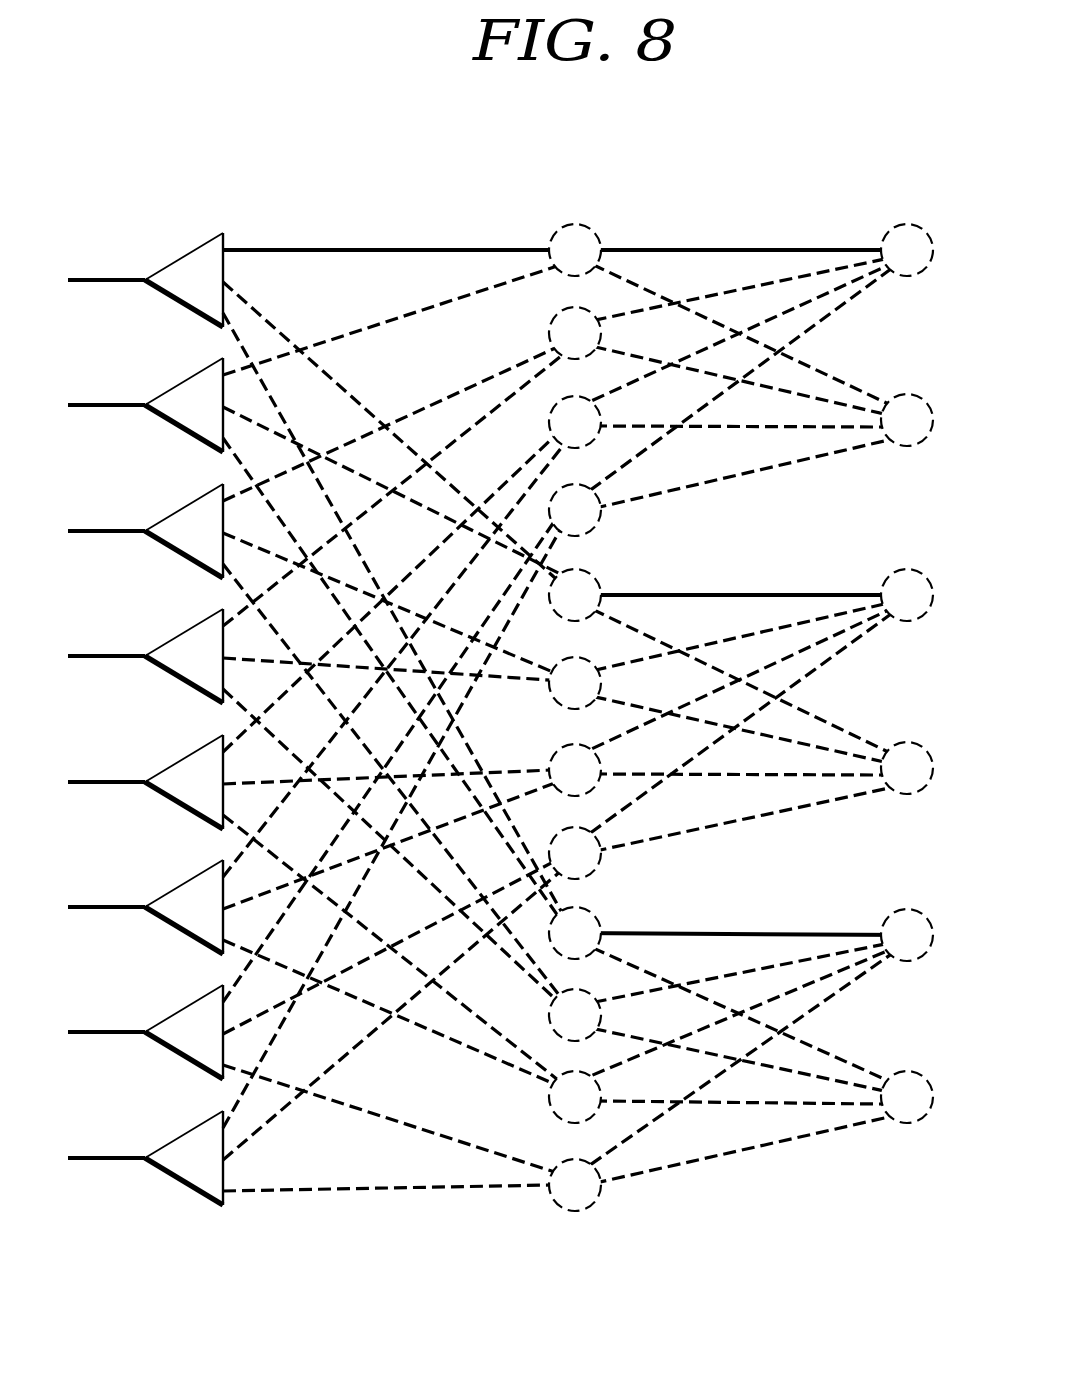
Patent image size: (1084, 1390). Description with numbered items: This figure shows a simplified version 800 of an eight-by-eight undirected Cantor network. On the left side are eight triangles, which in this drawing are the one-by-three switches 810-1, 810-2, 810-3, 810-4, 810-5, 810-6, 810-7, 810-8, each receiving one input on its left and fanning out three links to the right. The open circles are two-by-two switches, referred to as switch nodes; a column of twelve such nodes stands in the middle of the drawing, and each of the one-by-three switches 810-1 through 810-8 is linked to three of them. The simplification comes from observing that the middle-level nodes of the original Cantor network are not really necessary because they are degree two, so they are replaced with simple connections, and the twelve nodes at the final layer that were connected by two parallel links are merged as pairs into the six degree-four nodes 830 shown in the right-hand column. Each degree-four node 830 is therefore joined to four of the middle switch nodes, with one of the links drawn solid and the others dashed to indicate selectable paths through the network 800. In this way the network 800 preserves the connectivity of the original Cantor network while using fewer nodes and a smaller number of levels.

The simplified 8×8 undirected Cantor network 800 is at (833, 144).
The input amplifier 1 810-1 is at (182, 256).
The input amplifier 2 810-2 is at (182, 381).
The input amplifier 3 810-3 is at (182, 507).
The input amplifier 4 810-4 is at (182, 632).
The input amplifier 5 810-5 is at (182, 758).
The input amplifier 6 810-6 is at (182, 883).
The input amplifier 7 810-7 is at (182, 1008).
The input amplifier 8 810-8 is at (182, 1134).
The degree-4 nodes 830 is at (903, 1176).